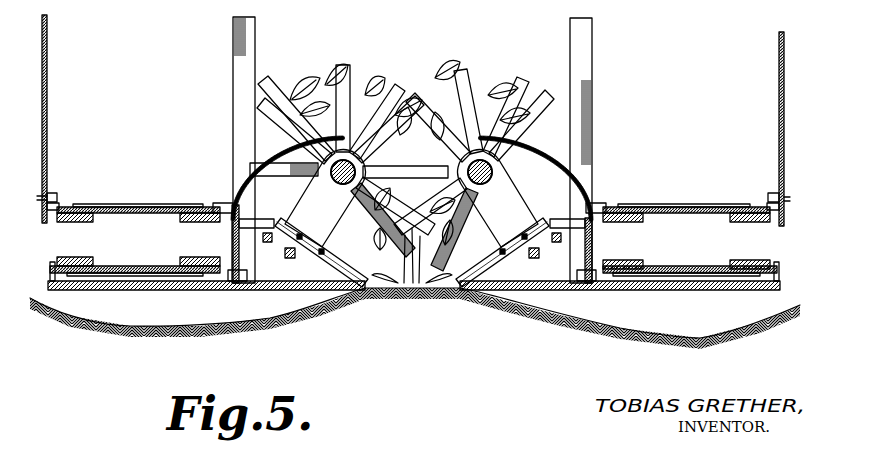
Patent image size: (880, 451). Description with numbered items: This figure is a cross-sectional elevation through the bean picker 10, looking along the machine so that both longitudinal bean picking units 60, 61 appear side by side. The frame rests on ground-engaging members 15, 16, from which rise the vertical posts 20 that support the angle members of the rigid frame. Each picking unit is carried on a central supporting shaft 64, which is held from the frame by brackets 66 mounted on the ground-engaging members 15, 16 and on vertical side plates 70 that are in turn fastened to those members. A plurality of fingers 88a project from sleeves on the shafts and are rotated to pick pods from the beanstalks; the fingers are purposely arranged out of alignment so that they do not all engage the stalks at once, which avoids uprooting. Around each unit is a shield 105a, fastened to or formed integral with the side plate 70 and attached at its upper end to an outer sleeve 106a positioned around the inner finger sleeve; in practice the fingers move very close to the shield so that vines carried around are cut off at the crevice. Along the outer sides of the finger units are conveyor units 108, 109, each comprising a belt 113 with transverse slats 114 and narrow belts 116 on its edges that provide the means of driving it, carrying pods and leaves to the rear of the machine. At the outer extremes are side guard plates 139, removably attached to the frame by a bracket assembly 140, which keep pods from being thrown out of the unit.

The bean picker 10 is at (288, 292).
The ground-engaging member 15 is at (652, 290).
The ground-engaging member 16 is at (175, 290).
The vertical post 20 is at (245, 33).
The longitudinal bean picking unit 60 is at (551, 135).
The longitudinal bean picking unit 61 is at (264, 144).
The central supporting shaft 64 is at (337, 180).
The bracket 66 is at (298, 211).
The vertical side plate 70 is at (232, 240).
The finger 88a is at (400, 95).
The shield 105a is at (592, 165).
The outer sleeve 106a is at (257, 152).
The conveyor unit 108 is at (680, 204).
The conveyor unit 109 is at (103, 200).
The belt 113 is at (147, 207).
The slat 114 is at (122, 204).
The narrow belt 116 is at (80, 223).
The side guard plate 139 is at (47, 72).
The bracket assembly 140 is at (768, 196).